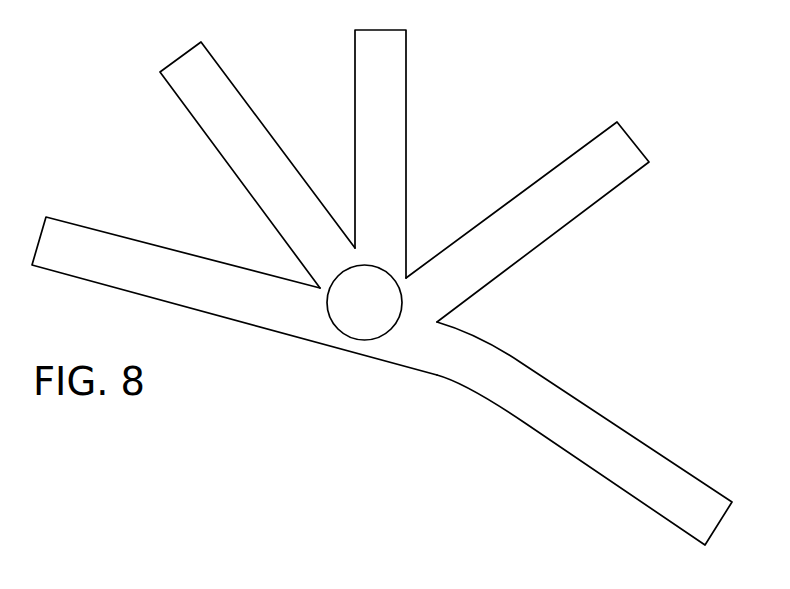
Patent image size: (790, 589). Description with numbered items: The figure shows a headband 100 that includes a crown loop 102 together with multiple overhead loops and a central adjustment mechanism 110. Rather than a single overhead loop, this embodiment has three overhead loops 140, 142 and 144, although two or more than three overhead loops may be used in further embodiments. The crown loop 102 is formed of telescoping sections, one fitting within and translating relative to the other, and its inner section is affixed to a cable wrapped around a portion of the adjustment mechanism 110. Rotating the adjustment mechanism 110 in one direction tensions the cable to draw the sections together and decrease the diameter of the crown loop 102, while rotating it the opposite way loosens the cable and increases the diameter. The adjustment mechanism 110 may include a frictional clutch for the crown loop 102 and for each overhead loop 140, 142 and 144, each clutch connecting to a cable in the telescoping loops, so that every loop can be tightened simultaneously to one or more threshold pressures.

The headband 100 is at (398, 287).
The crown loop 102 is at (620, 445).
The adjustment mechanism 110 is at (365, 318).
The overhead loop 140 is at (215, 107).
The overhead loop 142 is at (387, 70).
The overhead loop 144 is at (572, 182).